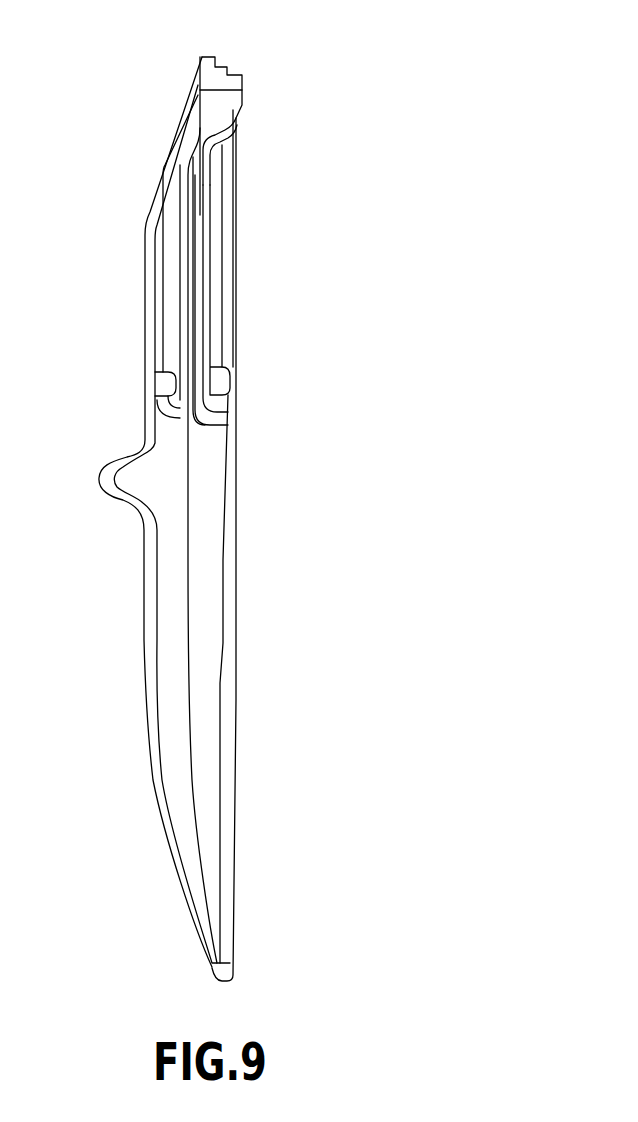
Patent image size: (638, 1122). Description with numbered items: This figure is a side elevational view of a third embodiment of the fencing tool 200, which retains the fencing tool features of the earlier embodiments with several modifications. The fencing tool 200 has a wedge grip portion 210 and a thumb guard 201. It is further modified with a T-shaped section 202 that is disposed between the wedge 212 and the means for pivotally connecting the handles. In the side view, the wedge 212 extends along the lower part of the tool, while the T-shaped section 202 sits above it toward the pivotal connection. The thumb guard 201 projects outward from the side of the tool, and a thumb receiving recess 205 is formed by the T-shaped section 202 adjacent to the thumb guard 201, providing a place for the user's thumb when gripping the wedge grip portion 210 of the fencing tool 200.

The fencing tool 200 is at (410, 128).
The thumb guard 201 is at (115, 492).
The T-shaped section 202 is at (185, 292).
The thumb receiving recess 205 is at (140, 437).
The wedge grip portion 210 is at (185, 267).
The wedge 212 is at (235, 748).